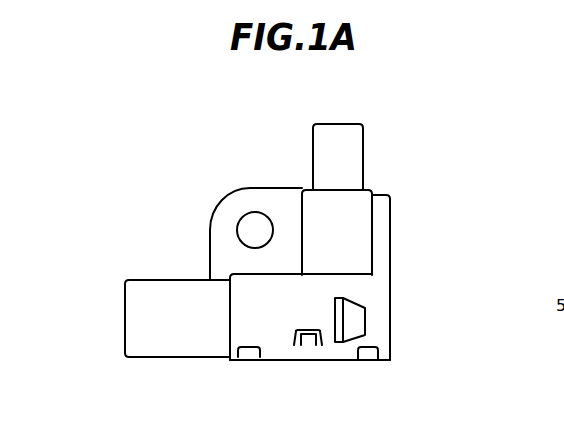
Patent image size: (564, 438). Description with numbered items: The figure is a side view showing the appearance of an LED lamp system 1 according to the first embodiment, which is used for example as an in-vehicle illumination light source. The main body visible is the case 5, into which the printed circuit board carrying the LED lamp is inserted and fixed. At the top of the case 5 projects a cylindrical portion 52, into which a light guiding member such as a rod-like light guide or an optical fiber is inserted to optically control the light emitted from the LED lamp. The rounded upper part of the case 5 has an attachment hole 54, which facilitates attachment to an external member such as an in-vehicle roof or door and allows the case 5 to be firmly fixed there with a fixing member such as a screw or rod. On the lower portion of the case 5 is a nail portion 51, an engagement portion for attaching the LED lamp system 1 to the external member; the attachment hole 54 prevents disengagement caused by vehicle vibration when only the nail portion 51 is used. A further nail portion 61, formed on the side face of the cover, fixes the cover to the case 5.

The LED lamp system 1 is at (203, 134).
The case 5 is at (232, 207).
The cylindrical portion 52 is at (341, 165).
The attachment hole 54 is at (252, 232).
The nail portion 51 is at (355, 325).
The nail portion 61 is at (310, 346).